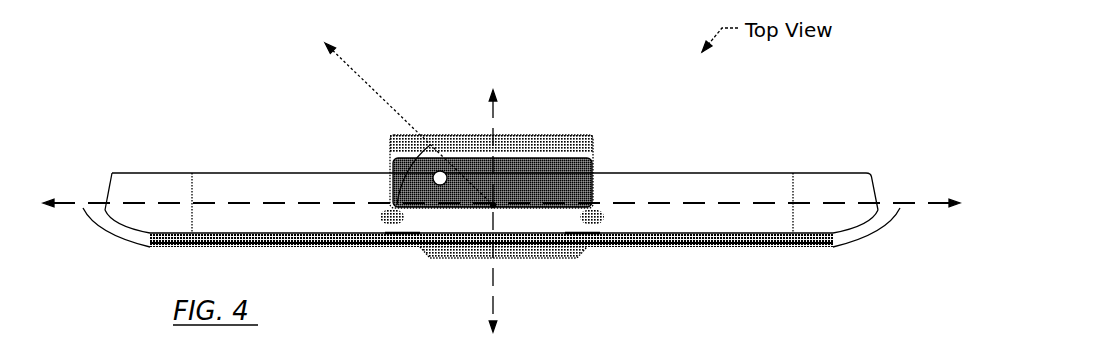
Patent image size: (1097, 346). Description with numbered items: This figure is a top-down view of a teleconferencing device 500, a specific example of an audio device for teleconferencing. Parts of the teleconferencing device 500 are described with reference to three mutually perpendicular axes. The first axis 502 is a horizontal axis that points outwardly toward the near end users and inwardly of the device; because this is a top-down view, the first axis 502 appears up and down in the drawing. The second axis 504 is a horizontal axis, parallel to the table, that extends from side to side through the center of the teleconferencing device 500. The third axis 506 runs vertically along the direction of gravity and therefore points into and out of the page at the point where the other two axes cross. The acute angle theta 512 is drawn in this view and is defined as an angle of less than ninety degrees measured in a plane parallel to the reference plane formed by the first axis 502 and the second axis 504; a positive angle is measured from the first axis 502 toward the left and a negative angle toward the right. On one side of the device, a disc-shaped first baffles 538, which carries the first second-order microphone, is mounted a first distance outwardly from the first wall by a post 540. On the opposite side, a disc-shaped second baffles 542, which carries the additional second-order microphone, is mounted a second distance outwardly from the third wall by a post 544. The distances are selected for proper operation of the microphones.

The teleconferencing device 500 is at (145, 128).
The first axis 502 is at (495, 122).
The second axis 504 is at (928, 205).
The third axis 506 is at (496, 208).
The theta 512 is at (407, 152).
The first baffles 538 is at (387, 232).
The post 540 is at (378, 217).
The second baffles 542 is at (597, 230).
The post 544 is at (605, 217).